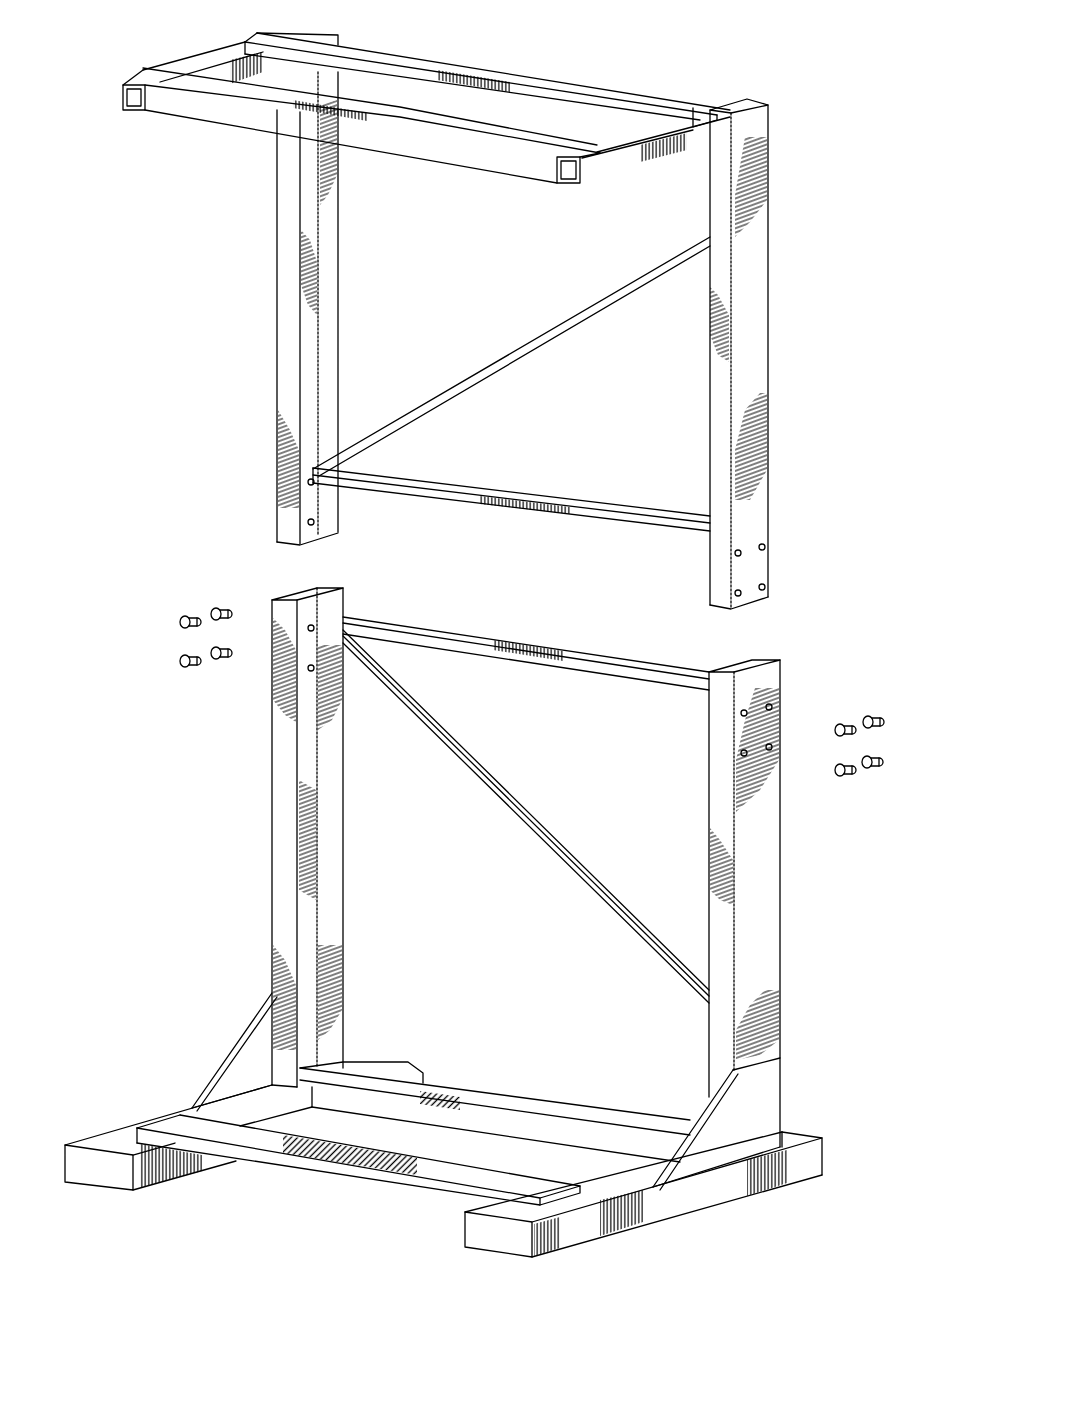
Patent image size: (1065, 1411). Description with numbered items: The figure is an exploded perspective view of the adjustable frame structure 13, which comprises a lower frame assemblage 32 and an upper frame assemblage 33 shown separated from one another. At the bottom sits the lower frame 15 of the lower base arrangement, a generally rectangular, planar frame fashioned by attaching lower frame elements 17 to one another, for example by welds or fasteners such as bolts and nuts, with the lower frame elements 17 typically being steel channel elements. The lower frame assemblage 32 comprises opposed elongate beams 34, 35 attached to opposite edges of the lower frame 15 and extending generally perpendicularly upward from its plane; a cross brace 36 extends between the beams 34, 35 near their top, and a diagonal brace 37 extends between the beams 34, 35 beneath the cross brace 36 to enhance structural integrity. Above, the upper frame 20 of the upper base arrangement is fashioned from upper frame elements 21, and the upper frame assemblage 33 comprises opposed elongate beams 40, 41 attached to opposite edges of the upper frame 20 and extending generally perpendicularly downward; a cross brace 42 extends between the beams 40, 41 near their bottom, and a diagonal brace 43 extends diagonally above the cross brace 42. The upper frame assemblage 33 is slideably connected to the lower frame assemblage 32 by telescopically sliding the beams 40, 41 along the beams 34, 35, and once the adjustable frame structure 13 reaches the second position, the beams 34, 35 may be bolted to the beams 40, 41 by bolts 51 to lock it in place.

The adjustable frame structure 13 is at (820, 145).
The lower frame 15 is at (700, 1192).
The lower frame elements 17 is at (553, 1188).
The upper frame 20 is at (245, 40).
The upper frame elements 21 is at (335, 33).
The lower frame assemblage 32 is at (768, 888).
The upper frame assemblage 33 is at (768, 322).
The elongate beam 34 is at (768, 822).
The elongate beam 35 is at (280, 818).
The cross brace 36 is at (578, 652).
The diagonal brace 37 is at (515, 797).
The elongate beam 40 is at (768, 388).
The elongate beam 41 is at (290, 318).
The cross brace 42 is at (490, 500).
The diagonal brace 43 is at (512, 352).
The bolts 51 is at (190, 612).